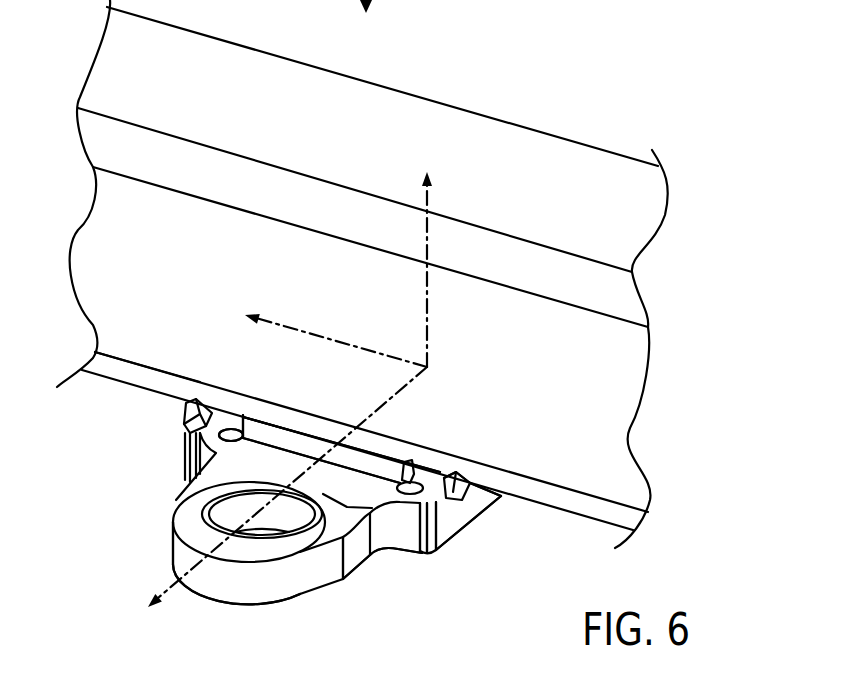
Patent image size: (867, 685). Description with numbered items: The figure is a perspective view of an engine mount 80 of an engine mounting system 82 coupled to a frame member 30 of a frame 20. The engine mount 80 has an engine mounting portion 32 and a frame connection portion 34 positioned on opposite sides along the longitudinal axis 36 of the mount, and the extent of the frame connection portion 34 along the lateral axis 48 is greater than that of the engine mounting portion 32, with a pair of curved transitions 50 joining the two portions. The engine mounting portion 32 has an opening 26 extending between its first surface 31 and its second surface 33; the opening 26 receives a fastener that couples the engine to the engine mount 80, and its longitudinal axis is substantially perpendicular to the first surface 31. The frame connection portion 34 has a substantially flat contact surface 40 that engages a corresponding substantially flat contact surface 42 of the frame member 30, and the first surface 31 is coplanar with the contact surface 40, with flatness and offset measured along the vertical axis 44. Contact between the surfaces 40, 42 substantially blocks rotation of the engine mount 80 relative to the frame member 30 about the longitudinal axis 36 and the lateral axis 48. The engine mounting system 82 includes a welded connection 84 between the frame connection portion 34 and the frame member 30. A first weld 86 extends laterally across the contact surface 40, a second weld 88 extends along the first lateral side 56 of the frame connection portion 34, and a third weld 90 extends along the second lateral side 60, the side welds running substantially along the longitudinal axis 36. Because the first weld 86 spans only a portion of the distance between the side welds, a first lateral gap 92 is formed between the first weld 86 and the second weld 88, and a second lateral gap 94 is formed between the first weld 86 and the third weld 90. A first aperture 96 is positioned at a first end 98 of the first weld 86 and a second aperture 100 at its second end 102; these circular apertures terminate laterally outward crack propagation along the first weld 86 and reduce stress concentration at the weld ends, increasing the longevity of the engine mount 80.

The frame 20 is at (480, 534).
The opening 26 is at (284, 536).
The frame member 30 is at (580, 458).
The first surface 31 is at (173, 512).
The engine mounting portion 32 is at (354, 580).
The second surface 33 is at (338, 600).
The frame connection portion 34 is at (511, 523).
The longitudinal axis 36 is at (174, 582).
The substantially flat contact surface 40 is at (243, 411).
The substantially flat contact surface 42 is at (96, 387).
The vertical axis 44 is at (427, 310).
The lateral axis 48 is at (333, 341).
The curved transitions 50 is at (158, 482).
The first lateral side 56 is at (154, 412).
The second lateral side 60 is at (506, 504).
The engine mount 80 is at (238, 604).
The engine mounting system 82 is at (138, 552).
The welded connection 84 is at (339, 411).
The first weld 86 is at (358, 461).
The second weld 88 is at (191, 401).
The third weld 90 is at (456, 477).
The first lateral gap 92 is at (229, 401).
The second lateral gap 94 is at (434, 468).
The first aperture 96 is at (221, 443).
The first end 98 is at (247, 430).
The second aperture 100 is at (441, 508).
The second end 102 is at (409, 461).